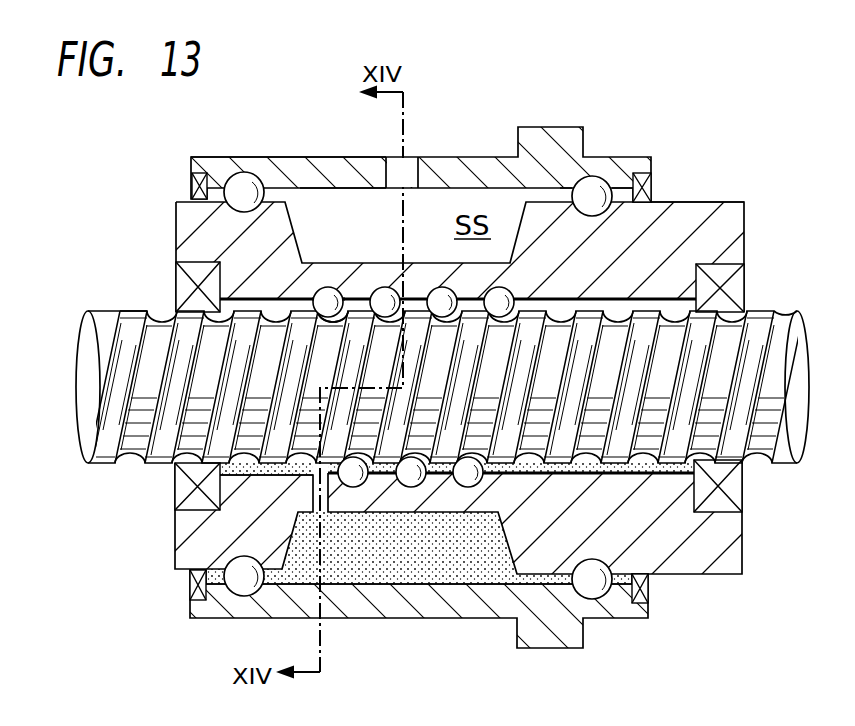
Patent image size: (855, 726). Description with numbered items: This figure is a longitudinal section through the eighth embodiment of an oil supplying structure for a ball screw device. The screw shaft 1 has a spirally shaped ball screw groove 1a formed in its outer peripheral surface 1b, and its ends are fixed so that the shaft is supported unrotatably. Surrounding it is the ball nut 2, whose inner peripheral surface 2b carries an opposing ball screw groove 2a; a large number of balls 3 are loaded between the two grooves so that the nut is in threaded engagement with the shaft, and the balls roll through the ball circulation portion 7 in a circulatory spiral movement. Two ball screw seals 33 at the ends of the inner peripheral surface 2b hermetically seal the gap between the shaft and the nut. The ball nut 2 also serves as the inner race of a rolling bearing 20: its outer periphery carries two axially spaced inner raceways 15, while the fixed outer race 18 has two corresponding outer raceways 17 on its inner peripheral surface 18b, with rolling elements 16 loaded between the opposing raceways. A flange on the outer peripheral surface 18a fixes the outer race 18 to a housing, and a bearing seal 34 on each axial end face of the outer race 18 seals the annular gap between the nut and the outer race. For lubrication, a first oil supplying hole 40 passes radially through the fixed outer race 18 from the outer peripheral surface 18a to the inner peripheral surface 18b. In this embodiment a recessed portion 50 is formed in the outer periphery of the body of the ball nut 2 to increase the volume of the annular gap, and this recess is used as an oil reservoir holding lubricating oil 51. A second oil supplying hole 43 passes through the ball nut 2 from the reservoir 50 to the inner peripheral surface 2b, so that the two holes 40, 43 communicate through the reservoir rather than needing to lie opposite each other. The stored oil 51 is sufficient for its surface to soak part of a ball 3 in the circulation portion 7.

The screw shaft 1 is at (82, 338).
The ball screw groove 1a is at (356, 292).
The outer peripheral surface 1b is at (130, 311).
The ball nut 2 is at (705, 203).
The ball screw groove 2a is at (322, 292).
The inner peripheral surface 2b is at (255, 472).
The balls 3 is at (441, 292).
The ball circulation portion 7 is at (447, 492).
The inner raceway 15 is at (653, 194).
The rolling elements 16 is at (607, 183).
The outer raceway 17 is at (597, 192).
The fixed outer race 18 is at (596, 157).
The outer peripheral surface 18a is at (285, 157).
The inner peripheral surface 18b is at (335, 186).
The rolling bearing 20 is at (672, 158).
The ball screw seal 33 is at (178, 270).
The bearing seal 34 is at (192, 186).
The first oil supplying hole 40 is at (413, 157).
The second oil supplying hole 43 is at (315, 498).
The recessed portion (oil reservoir) 50 is at (406, 565).
The lubricating oil 51 is at (370, 577).